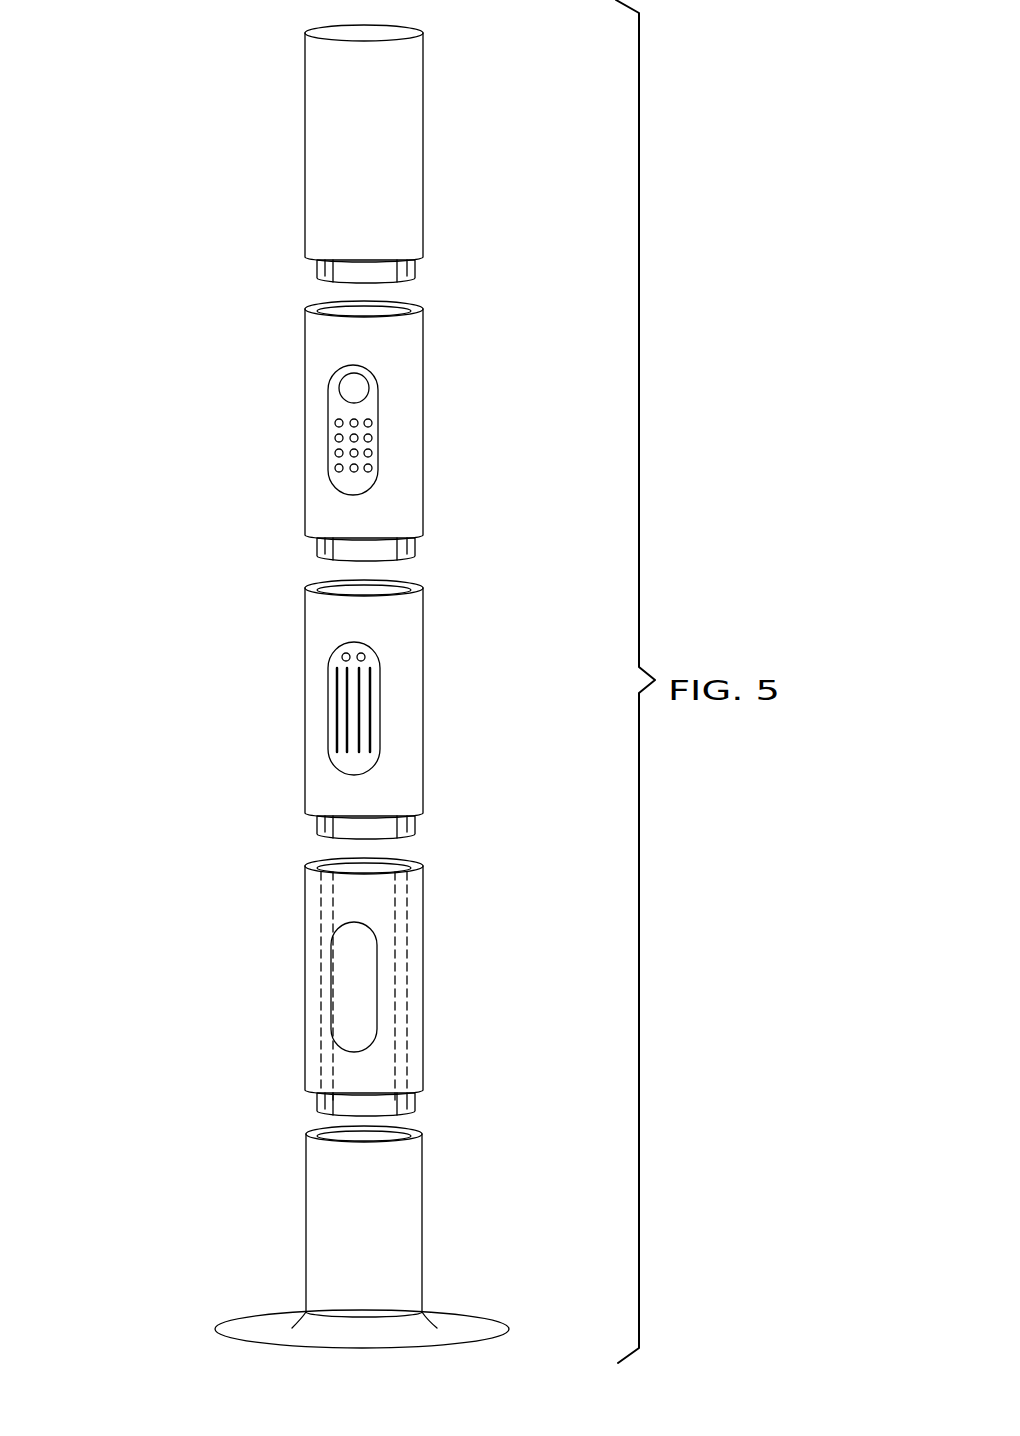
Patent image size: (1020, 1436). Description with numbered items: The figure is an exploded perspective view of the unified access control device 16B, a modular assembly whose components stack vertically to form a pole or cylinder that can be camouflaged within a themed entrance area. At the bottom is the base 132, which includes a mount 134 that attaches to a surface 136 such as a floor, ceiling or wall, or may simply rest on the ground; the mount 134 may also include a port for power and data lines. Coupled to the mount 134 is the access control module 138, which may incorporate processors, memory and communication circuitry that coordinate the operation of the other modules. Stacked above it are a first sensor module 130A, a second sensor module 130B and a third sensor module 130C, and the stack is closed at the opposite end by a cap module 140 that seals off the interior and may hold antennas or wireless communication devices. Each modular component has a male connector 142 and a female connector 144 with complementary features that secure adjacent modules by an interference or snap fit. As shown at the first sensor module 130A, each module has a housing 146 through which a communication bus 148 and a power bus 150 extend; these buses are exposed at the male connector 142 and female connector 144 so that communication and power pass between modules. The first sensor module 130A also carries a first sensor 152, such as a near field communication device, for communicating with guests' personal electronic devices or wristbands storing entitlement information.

The unified access control device 16B is at (493, 36).
The cap module 140 is at (412, 110).
The third sensor module 130C is at (411, 388).
The second sensor module 130B is at (411, 666).
The male connector 142 is at (430, 824).
The first sensor module 130A is at (412, 946).
The housing 146 is at (350, 895).
The female connector 144 is at (400, 856).
The first sensor 152 is at (347, 988).
The communication bus 148 is at (400, 991).
The power bus 150 is at (310, 1063).
The access control module 138 is at (410, 1210).
The mount 134 is at (490, 1340).
The surface 136 is at (186, 1315).
The base 132 is at (528, 1315).